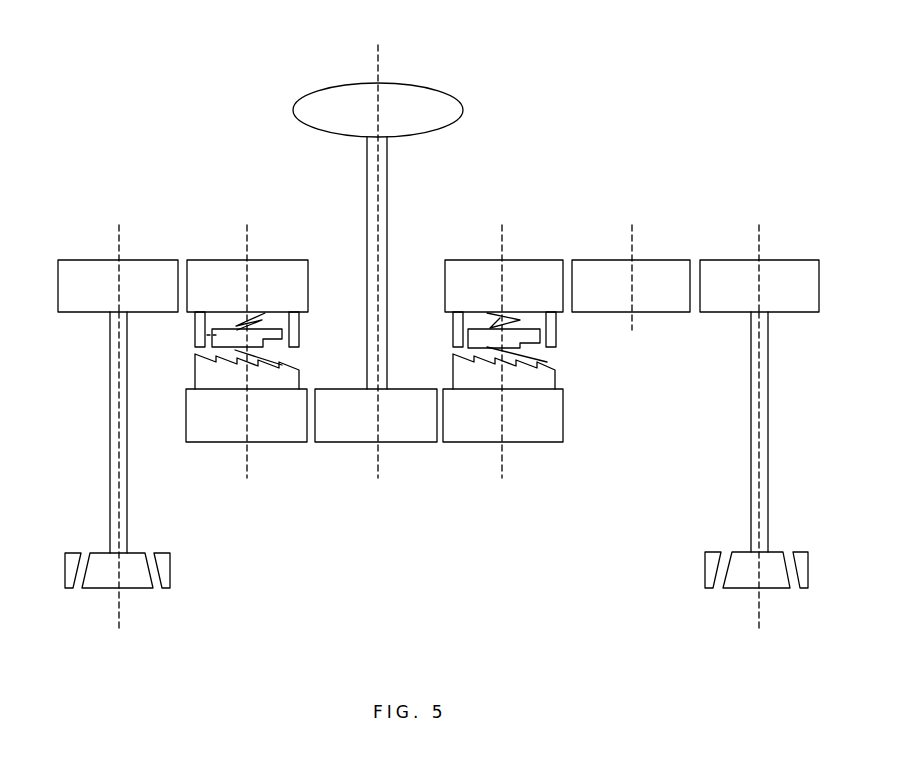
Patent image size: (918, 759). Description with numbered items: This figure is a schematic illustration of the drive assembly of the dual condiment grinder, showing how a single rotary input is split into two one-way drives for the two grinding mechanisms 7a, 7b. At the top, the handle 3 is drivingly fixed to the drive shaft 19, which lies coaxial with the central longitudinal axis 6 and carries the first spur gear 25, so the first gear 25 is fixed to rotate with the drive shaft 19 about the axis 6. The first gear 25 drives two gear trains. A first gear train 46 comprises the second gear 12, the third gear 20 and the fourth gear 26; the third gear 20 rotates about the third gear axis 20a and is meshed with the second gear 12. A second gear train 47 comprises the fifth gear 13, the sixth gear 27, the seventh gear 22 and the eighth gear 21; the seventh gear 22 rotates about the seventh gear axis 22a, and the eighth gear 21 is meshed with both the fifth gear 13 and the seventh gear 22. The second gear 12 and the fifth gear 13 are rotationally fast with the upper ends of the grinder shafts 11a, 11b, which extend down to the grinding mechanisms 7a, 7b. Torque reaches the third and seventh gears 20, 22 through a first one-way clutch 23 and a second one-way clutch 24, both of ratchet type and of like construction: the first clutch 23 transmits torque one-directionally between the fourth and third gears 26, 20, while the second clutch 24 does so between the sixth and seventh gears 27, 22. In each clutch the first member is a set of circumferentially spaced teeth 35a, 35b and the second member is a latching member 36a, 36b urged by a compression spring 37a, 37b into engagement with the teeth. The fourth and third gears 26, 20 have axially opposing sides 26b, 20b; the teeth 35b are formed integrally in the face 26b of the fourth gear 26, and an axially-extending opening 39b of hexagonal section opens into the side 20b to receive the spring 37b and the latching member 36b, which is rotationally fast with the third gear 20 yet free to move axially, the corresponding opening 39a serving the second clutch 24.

The handle 3 is at (480, 114).
The central longitudinal axis 6 is at (380, 58).
The drive shaft 19 is at (387, 185).
The first gear train 46 is at (141, 158).
The second gear train 47 is at (712, 180).
The second spur gear 12 is at (92, 272).
The fifth spur gear 13 is at (782, 272).
The grinder shaft 11a is at (110, 432).
The grinder shaft 11b is at (768, 416).
The grinding mechanism 7a is at (89, 610).
The grinding mechanism 7b is at (790, 609).
The third spur gear 20 is at (264, 270).
The third gear axis 20a is at (238, 244).
The side of third gear 20b is at (186, 335).
The seventh spur gear 22 is at (521, 272).
The seventh gear axis 22a is at (500, 248).
The eighth spur gear 21 is at (647, 272).
The first one-way clutch 23 is at (310, 350).
The second one-way clutch 24 is at (434, 356).
The compression spring 37a is at (495, 317).
The compression spring 37b is at (264, 312).
The axially-extending opening 39a is at (557, 320).
The axially-extending opening 39b is at (300, 320).
The latching member 36a is at (530, 340).
The latching member 36b is at (193, 344).
The teeth 35a is at (547, 358).
The teeth 35b is at (291, 361).
The side of fourth gear 26b is at (185, 382).
The fourth spur gear 26 is at (275, 435).
The first spur gear 25 is at (402, 430).
The sixth spur gear 27 is at (530, 427).